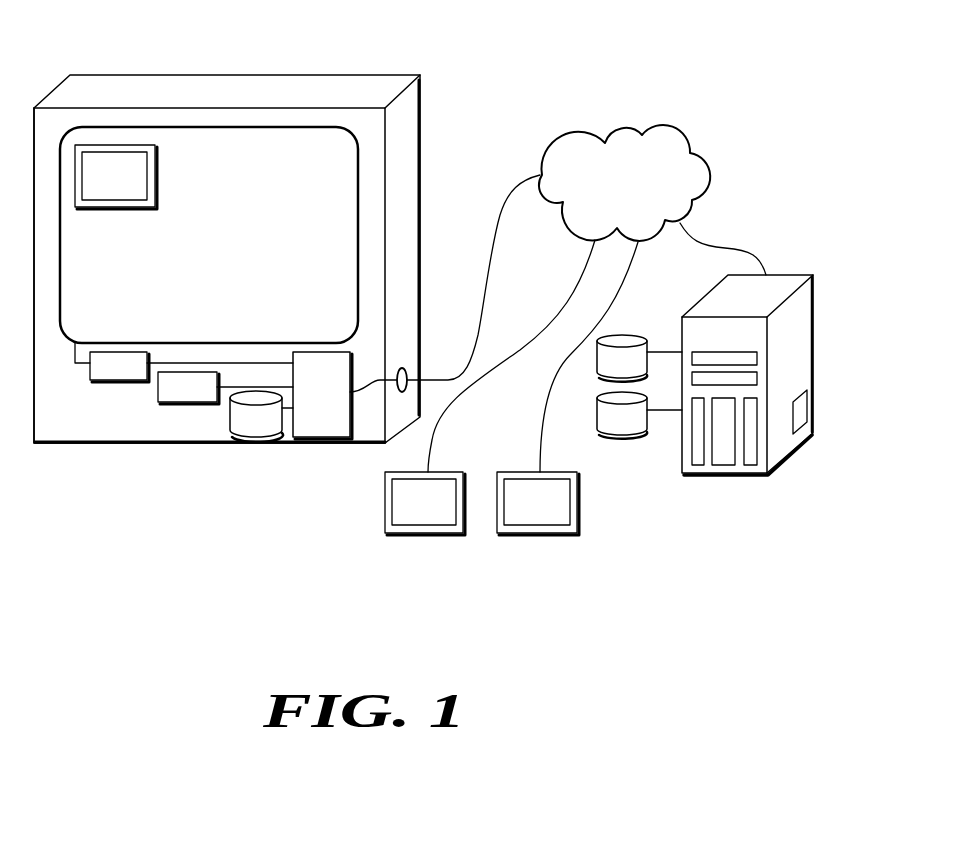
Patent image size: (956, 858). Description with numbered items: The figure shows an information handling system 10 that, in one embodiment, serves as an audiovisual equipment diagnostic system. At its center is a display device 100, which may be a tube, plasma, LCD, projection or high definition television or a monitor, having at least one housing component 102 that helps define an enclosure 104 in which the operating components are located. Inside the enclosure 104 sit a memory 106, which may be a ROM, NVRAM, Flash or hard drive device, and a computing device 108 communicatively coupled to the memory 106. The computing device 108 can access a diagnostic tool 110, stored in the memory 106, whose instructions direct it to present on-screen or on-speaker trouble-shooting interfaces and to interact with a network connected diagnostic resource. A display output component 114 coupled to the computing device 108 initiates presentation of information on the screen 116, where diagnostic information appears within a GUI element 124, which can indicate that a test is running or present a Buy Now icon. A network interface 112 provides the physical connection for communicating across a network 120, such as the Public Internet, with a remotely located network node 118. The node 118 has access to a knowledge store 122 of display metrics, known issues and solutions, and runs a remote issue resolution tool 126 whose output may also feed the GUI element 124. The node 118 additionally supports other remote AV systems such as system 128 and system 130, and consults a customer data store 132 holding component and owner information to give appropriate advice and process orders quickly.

The information handling system 10 is at (616, 93).
The display device 100 is at (432, 53).
The housing component 102 is at (84, 429).
The enclosure 104 is at (113, 465).
The memory 106 is at (237, 427).
The computing device 108 is at (302, 403).
The diagnostic tool 110 is at (169, 398).
The network interface 112 is at (404, 358).
The display output component 114 is at (99, 377).
The screen 116 is at (186, 237).
The network node 118 is at (703, 347).
The network 120 is at (606, 193).
The knowledge store 122 is at (603, 428).
The GUI element 124 is at (96, 187).
The remote issue resolution tool 126 is at (800, 387).
The AV system 128 is at (405, 513).
The AV system 130 is at (518, 513).
The customer data store 132 is at (603, 371).